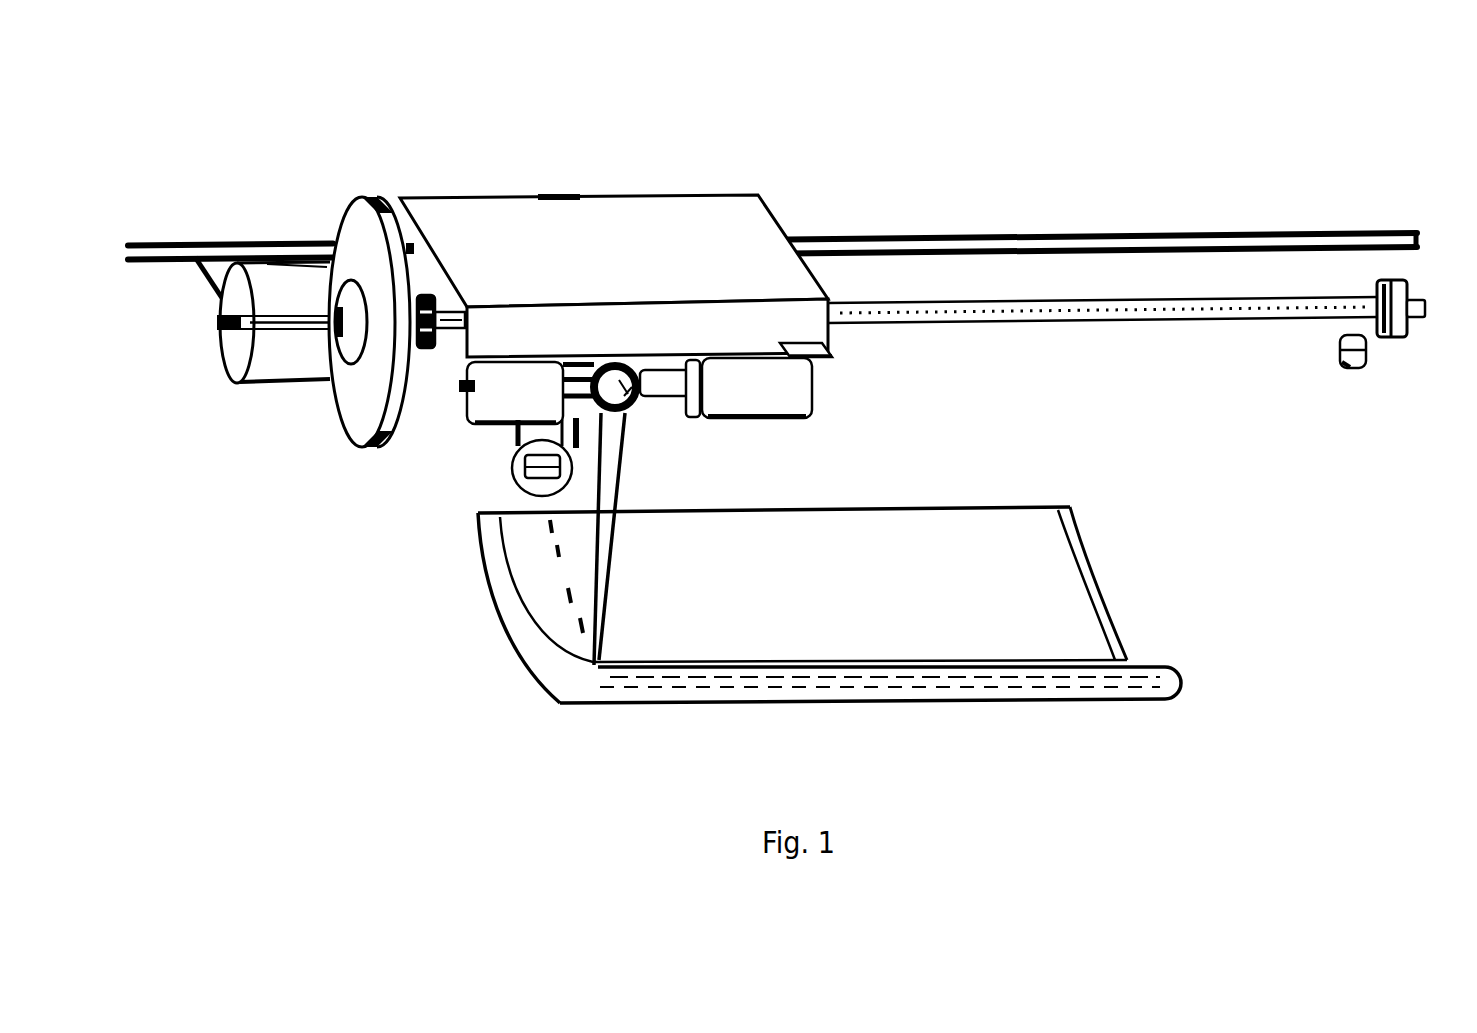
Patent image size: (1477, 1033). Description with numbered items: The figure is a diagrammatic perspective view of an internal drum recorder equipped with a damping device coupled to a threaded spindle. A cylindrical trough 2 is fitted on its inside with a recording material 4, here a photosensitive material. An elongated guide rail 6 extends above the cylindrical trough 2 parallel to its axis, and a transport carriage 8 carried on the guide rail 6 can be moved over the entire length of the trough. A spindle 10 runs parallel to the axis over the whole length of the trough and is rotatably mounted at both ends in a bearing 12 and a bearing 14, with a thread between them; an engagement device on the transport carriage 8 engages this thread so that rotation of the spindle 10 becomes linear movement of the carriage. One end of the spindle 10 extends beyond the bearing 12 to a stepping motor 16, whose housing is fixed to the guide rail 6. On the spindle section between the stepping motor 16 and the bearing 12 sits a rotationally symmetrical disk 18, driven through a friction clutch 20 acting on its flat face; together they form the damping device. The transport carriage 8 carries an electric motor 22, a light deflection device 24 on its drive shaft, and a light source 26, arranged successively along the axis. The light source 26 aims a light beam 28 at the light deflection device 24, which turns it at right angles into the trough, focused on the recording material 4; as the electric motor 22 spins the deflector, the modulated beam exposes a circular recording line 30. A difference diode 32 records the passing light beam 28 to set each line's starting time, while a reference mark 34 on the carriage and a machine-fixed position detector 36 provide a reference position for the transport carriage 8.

The cylindrical trough 2 is at (950, 690).
The recording material 4 is at (1045, 568).
The guide rail 6 is at (953, 233).
The transport carriage 8 is at (577, 225).
The spindle 10 is at (1080, 312).
The bearing 12 is at (427, 303).
The bearing 14 is at (1410, 332).
The stepping motor 16 is at (270, 362).
The disk 18 is at (345, 243).
The friction clutch 20 is at (355, 355).
The electric motor 22 is at (502, 410).
The light deflection device 24 is at (635, 412).
The light source 26 is at (767, 400).
The light beam 28 is at (603, 533).
The recording line 30 is at (578, 628).
The difference diode 32 is at (525, 470).
The reference mark 34 is at (830, 360).
The position detector 36 is at (1348, 372).